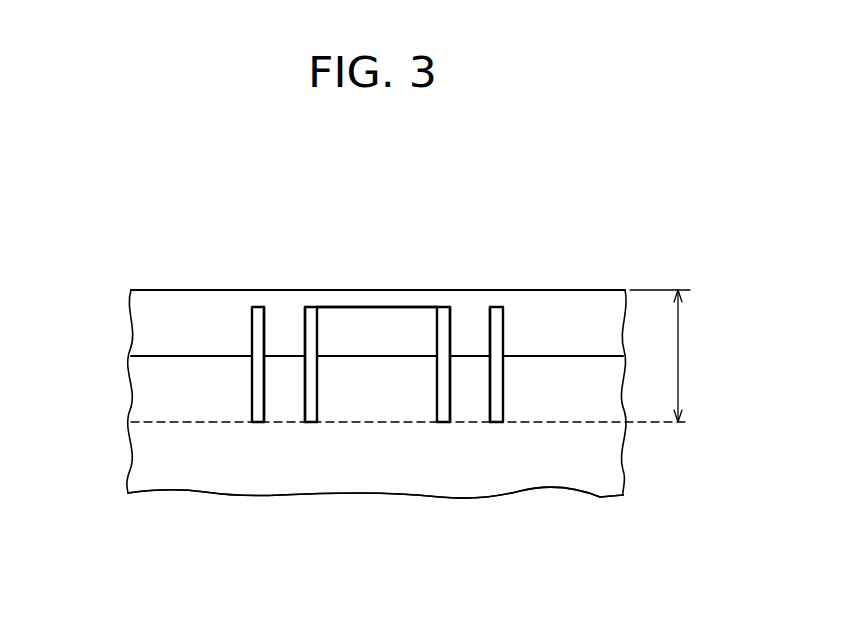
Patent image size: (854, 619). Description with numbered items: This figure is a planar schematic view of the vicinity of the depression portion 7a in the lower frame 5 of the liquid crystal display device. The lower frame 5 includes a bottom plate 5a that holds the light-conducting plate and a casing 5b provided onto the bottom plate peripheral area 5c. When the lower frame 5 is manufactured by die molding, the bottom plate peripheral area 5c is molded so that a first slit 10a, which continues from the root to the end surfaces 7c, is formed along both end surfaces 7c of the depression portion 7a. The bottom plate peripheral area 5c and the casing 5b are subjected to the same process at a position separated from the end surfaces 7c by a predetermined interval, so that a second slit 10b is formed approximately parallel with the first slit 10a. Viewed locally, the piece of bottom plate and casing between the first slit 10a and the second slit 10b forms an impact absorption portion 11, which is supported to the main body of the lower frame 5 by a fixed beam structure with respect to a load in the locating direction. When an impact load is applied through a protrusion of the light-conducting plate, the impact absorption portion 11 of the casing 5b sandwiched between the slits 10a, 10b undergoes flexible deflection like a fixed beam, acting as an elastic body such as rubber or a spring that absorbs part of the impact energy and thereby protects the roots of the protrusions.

The lower frame 5 is at (181, 183).
The bottom plate 5a is at (587, 480).
The casing 5b is at (566, 310).
The bottom plate peripheral area 5c is at (660, 356).
The depression portion 7a is at (375, 339).
The end surfaces 7c is at (440, 324).
The first slit 10a is at (317, 393).
The second slit 10b is at (264, 392).
The impact absorption portion 11 is at (284, 333).